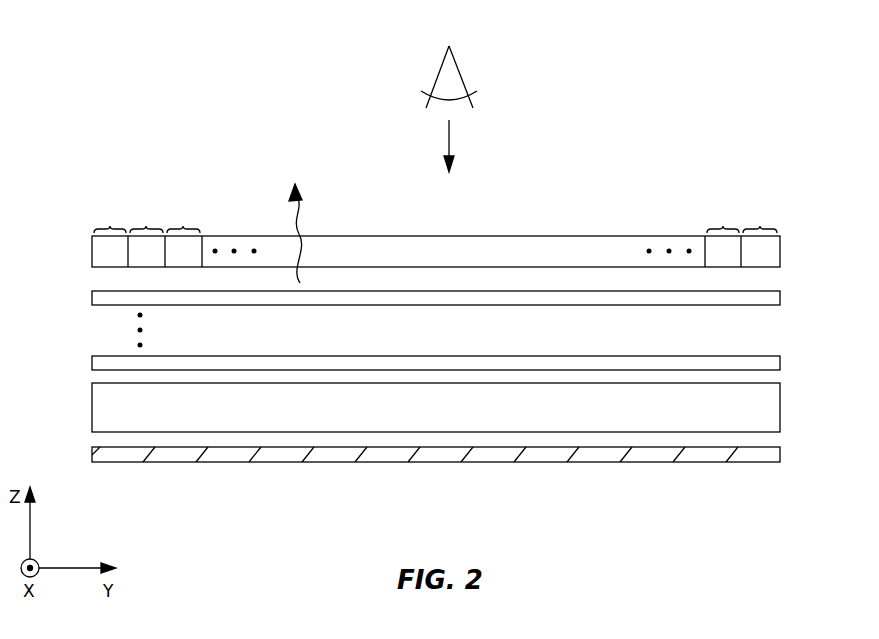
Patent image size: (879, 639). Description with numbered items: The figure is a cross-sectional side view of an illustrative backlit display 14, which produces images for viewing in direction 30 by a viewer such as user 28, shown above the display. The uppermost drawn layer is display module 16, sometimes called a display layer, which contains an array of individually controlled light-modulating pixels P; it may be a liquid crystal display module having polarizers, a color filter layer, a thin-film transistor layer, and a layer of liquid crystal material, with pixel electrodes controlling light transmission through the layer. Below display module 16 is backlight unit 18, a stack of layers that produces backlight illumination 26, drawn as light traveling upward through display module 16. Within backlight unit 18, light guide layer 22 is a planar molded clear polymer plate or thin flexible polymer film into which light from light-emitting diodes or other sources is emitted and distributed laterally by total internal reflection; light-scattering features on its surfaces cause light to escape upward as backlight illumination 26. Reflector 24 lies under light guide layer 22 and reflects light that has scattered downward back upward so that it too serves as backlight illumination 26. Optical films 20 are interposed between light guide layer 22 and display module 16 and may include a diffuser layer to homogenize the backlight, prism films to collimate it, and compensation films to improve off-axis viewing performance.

The display 14 is at (772, 78).
The display module 16 is at (780, 252).
The backlight unit 18 is at (430, 376).
The optical films 20 is at (788, 290).
The light guide layer 22 is at (770, 407).
The reflector 24 is at (770, 455).
The backlight illumination 26 is at (299, 214).
The user 28 is at (460, 72).
The direction 30 is at (449, 145).